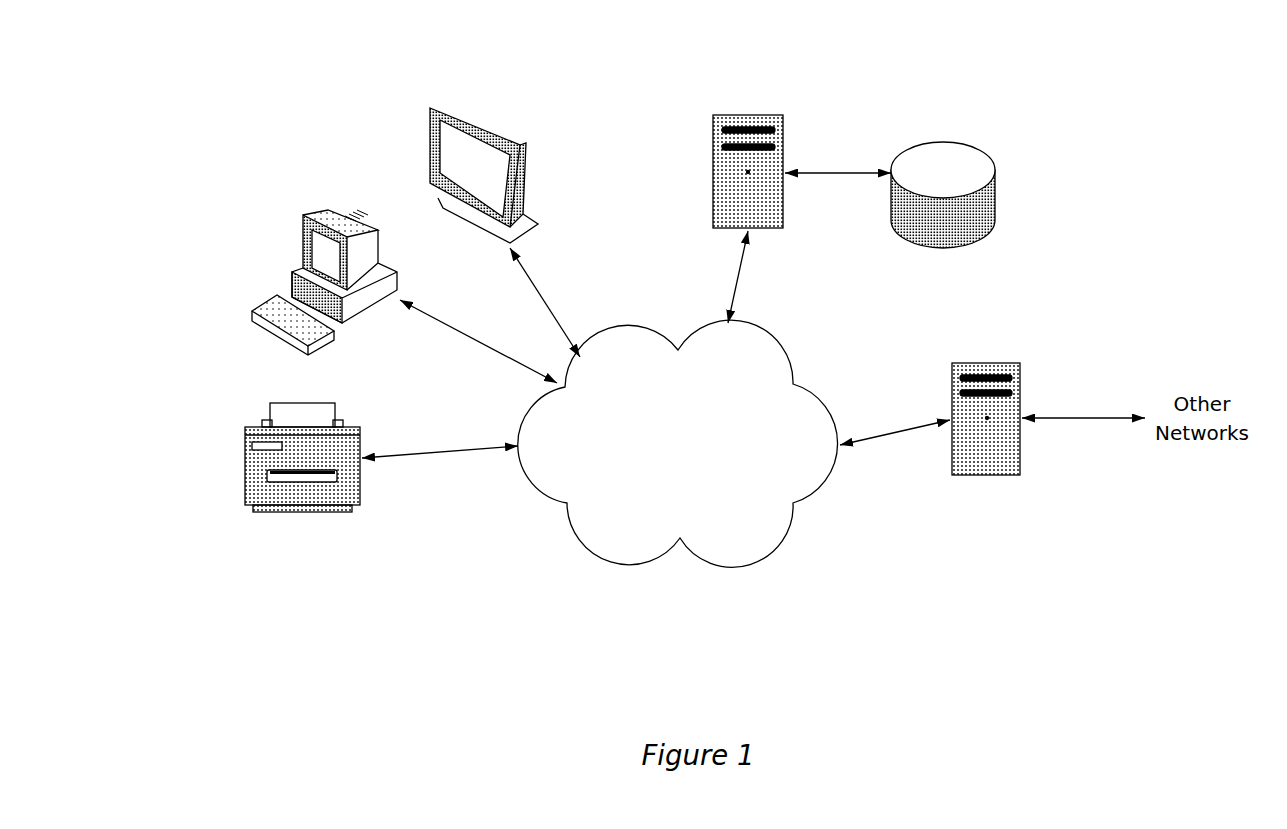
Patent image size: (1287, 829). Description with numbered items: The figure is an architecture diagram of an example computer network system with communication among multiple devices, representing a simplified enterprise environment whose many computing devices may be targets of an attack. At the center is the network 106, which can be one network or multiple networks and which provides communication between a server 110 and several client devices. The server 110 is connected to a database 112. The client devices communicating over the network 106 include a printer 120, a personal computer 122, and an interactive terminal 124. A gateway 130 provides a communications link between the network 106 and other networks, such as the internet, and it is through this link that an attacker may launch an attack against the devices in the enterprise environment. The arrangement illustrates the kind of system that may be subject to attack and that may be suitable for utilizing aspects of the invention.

The network 106 is at (664, 470).
The server 110 is at (747, 115).
The database 112 is at (973, 142).
The printer 120 is at (245, 457).
The personal computer 122 is at (325, 212).
The interactive terminal 124 is at (525, 147).
The gateway 130 is at (987, 363).